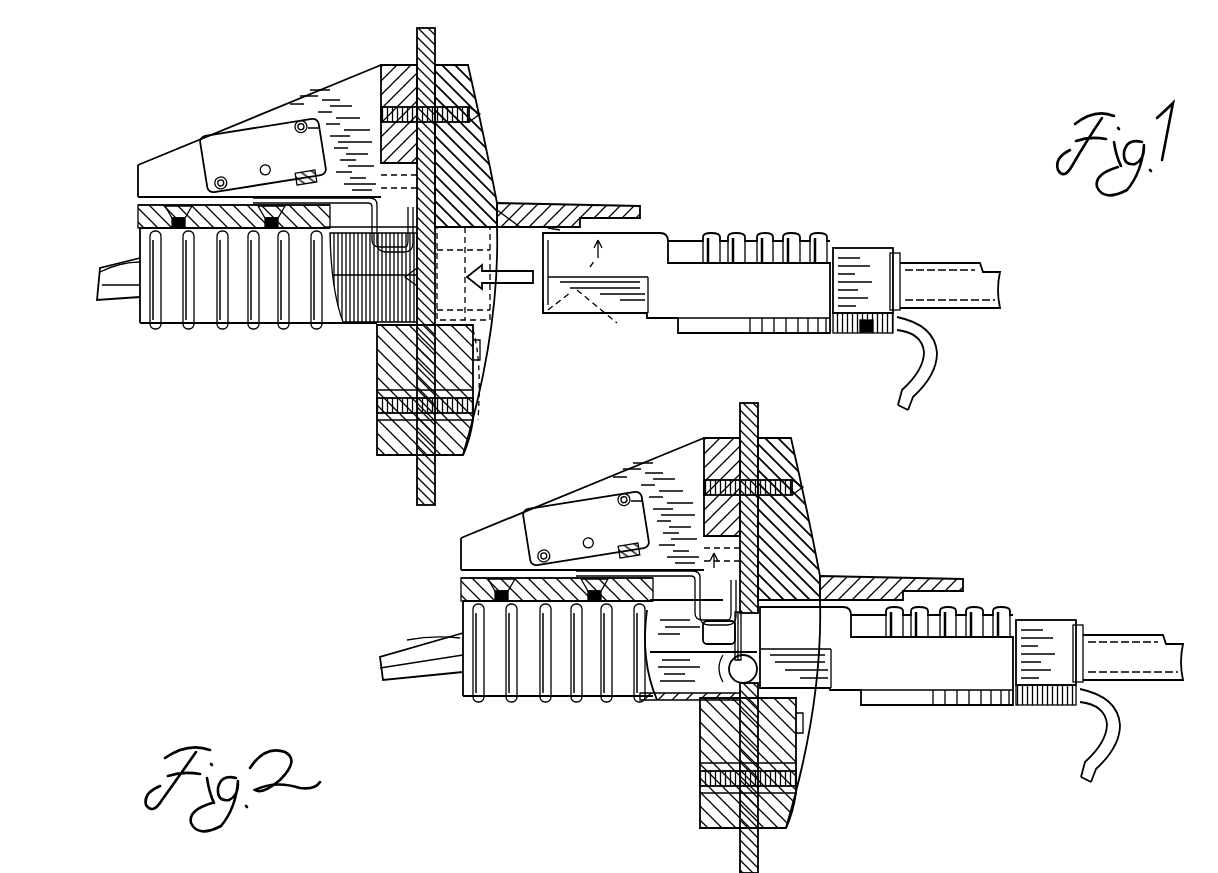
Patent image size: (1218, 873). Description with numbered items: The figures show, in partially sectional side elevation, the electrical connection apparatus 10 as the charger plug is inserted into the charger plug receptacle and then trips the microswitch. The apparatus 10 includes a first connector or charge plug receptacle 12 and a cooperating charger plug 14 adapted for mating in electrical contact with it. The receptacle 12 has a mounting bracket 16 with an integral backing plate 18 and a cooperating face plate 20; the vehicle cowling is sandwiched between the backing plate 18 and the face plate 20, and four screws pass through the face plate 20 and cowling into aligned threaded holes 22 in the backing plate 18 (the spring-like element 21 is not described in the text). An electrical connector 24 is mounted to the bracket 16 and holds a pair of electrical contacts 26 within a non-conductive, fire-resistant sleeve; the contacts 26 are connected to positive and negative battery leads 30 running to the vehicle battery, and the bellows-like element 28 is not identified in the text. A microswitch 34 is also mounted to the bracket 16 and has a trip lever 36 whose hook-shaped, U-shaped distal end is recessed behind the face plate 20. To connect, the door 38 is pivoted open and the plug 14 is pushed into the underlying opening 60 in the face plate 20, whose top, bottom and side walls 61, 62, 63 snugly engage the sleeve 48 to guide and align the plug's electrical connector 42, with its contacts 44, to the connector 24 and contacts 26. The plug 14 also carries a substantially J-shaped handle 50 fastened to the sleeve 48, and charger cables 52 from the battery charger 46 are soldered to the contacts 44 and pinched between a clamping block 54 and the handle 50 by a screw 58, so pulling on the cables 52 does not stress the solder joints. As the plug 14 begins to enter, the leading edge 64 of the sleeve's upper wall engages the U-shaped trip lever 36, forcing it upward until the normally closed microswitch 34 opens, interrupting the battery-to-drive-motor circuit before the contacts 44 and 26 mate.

In FIG. 1, the electrical connection apparatus 10 is at (700, 188).
In FIG. 2, the electrical connection apparatus 10 is at (913, 515).
In FIG. 1, the charge plug receptacle 12 is at (258, 398).
In FIG. 2, the charge plug receptacle 12 is at (524, 775).
In FIG. 1, the charger plug 14 is at (796, 204).
In FIG. 2, the charger plug 14 is at (993, 577).
In FIG. 1, the mounting bracket 16 is at (330, 105).
In FIG. 2, the mounting bracket 16 is at (600, 504).
In FIG. 1, the backing plate 18 is at (385, 447).
In FIG. 2, the backing plate 18 is at (714, 763).
In FIG. 1, the face plate 20 is at (450, 440).
In FIG. 2, the face plate 20 is at (781, 631).
In FIG. 1, the spring 21 is at (468, 410).
In FIG. 2, the spring 21 is at (789, 631).
In FIG. 1, the threaded holes 22 is at (395, 398).
In FIG. 2, the threaded holes 22 is at (710, 766).
In FIG. 1, the electrical connector 24 is at (143, 240).
In FIG. 2, the electrical connector 24 is at (525, 588).
In FIG. 2, the electrical contacts 26 is at (728, 643).
In FIG. 1, the bellows strain relief 28 is at (222, 327).
In FIG. 2, the bellows strain relief 28 is at (557, 676).
In FIG. 1, the battery leads 30 is at (135, 300).
In FIG. 2, the battery leads 30 is at (394, 647).
In FIG. 1, the microswitch 34 is at (258, 157).
In FIG. 2, the microswitch 34 is at (586, 531).
In FIG. 1, the trip lever 36 is at (360, 198).
In FIG. 2, the trip lever 36 is at (656, 580).
In FIG. 1, the door 38 is at (558, 213).
In FIG. 2, the door 38 is at (891, 563).
In FIG. 1, the electrical connector 42 is at (830, 237).
In FIG. 2, the electrical connector 42 is at (1012, 617).
In FIG. 2, the contacts 44 is at (738, 669).
In FIG. 1, the battery charger 46 is at (1066, 287).
In FIG. 1, the sleeve 48 is at (700, 295).
In FIG. 2, the sleeve 48 is at (937, 697).
In FIG. 1, the handle 50 is at (935, 378).
In FIG. 2, the handle 50 is at (1115, 737).
In FIG. 1, the charger cables 52 is at (958, 287).
In FIG. 2, the charger cables 52 is at (1135, 672).
In FIG. 1, the clamping block 54 is at (873, 253).
In FIG. 2, the clamping block 54 is at (1060, 630).
In FIG. 1, the screw 58 is at (865, 332).
In FIG. 2, the screw 58 is at (1046, 695).
In FIG. 1, the opening 60 is at (545, 318).
In FIG. 1, the top wall 61 is at (507, 208).
In FIG. 1, the bottom wall 62 is at (540, 327).
In FIG. 1, the side wall 63 is at (463, 294).
In FIG. 1, the leading edge 64 is at (373, 277).
In FIG. 2, the leading edge 64 is at (710, 613).